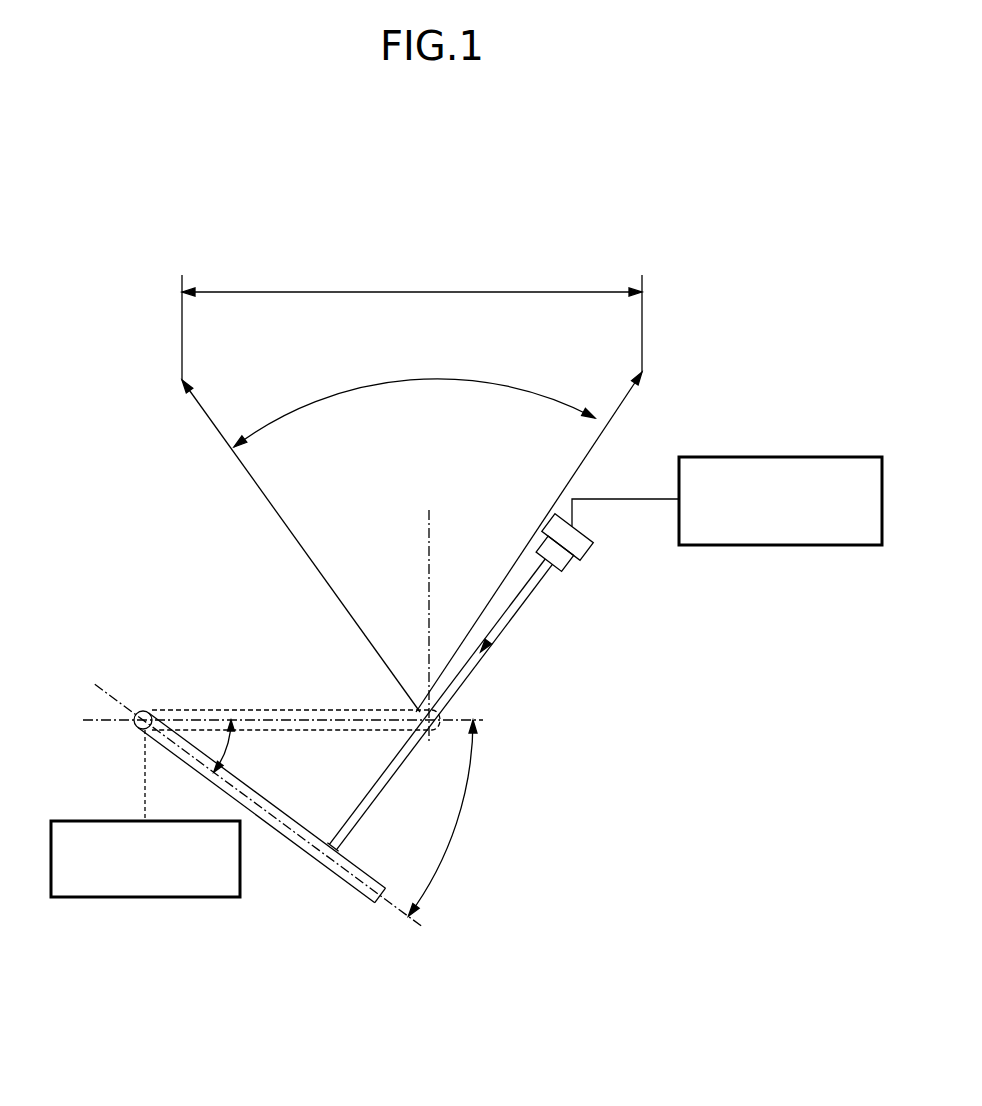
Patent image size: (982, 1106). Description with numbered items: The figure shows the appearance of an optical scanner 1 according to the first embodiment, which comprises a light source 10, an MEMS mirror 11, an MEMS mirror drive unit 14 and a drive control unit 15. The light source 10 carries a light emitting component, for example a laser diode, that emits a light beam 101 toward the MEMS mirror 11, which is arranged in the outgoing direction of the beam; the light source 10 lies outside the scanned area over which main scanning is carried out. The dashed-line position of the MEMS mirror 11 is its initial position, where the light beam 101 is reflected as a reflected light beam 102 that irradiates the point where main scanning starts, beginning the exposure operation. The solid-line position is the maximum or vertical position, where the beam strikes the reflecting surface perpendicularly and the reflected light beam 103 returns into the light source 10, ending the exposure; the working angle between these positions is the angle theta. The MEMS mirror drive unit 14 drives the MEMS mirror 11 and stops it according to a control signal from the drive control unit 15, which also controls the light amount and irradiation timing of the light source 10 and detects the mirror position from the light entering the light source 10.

The optical scanner 1 is at (168, 205).
The light source 10 is at (593, 547).
The MEMS mirror 11 is at (172, 708).
The MEMS mirror drive unit 14 is at (103, 820).
The drive control unit 15 is at (765, 457).
The light beam 101 is at (517, 613).
The reflected light beam 102 is at (208, 424).
The reflected light beam 103 is at (620, 400).